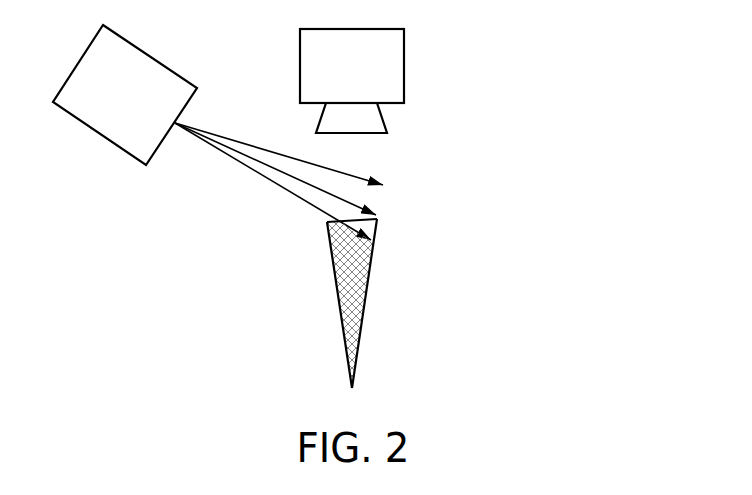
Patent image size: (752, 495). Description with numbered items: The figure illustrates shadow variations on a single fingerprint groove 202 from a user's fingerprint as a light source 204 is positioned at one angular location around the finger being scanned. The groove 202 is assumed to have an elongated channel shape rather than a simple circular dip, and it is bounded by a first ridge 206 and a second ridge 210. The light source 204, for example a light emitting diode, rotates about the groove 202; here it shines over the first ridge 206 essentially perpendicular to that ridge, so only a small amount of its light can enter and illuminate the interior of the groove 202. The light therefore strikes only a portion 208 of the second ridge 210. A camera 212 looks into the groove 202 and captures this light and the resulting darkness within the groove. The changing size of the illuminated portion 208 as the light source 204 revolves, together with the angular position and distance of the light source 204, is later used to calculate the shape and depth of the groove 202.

The groove 202 is at (315, 262).
The light source 204 is at (151, 111).
The first ridge 206 is at (333, 281).
The illuminated portion 208 is at (382, 222).
The second ridge 210 is at (370, 288).
The camera 212 is at (373, 81).